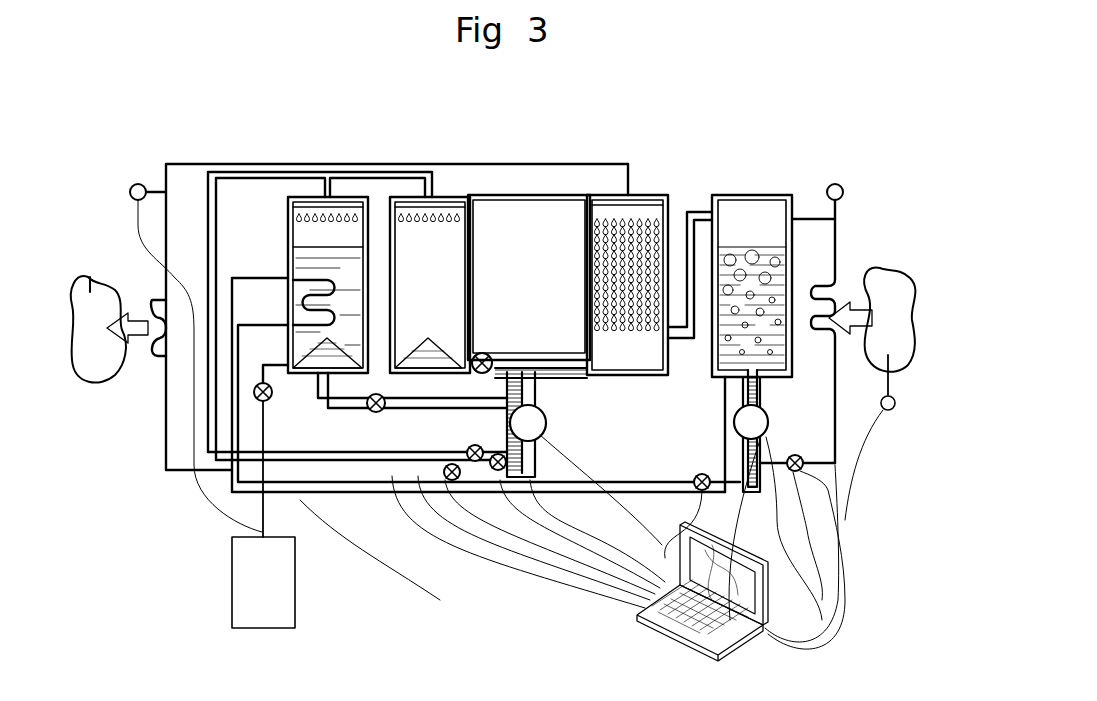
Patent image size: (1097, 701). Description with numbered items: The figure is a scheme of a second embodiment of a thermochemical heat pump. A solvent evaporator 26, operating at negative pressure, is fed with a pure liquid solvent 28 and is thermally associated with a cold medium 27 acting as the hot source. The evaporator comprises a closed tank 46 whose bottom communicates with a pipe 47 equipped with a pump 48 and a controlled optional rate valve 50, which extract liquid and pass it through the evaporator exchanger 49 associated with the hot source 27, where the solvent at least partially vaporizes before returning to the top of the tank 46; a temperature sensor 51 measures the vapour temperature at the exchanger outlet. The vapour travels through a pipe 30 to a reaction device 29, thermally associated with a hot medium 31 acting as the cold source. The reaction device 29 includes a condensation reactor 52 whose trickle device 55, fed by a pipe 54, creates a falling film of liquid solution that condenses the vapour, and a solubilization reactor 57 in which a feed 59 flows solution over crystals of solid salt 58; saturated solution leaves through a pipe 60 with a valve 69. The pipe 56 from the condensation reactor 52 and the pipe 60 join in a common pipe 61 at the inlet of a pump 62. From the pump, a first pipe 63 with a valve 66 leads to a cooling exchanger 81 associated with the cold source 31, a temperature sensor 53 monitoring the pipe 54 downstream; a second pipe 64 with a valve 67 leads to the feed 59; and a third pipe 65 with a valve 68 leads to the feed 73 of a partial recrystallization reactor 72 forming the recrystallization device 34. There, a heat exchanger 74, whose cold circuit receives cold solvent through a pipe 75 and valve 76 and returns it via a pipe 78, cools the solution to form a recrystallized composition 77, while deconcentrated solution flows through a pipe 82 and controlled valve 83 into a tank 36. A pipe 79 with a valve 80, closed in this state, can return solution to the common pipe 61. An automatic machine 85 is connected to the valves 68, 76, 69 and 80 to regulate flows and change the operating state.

The solvent evaporator 26 is at (803, 249).
The cold medium 27 is at (892, 298).
The pure liquid solvent 28 is at (741, 229).
The reaction device 29 is at (488, 197).
The pipe 30 is at (690, 290).
The hot medium 31 is at (88, 277).
The recrystallization device 34 is at (265, 188).
The tank 36 is at (250, 560).
The closed tank 46 is at (766, 200).
The pipe 47 is at (768, 430).
The pump 48 is at (803, 468).
The evaporator exchanger 49 is at (852, 270).
The controlled optional rate valve 50 is at (834, 470).
The temperature sensor 51 is at (838, 184).
The condensation reactor 52 is at (612, 262).
The temperature sensor 53 is at (135, 185).
The pipe 54 is at (522, 163).
The trickle device 55 is at (635, 205).
The pipe 56 is at (563, 357).
The solubilization reactor 57 is at (439, 227).
The solid salt crystals 58 is at (425, 335).
The feed 59 is at (437, 205).
The pipe 60 is at (470, 355).
The common pipe 61 is at (535, 395).
The pump 62 is at (547, 423).
The first pipe 63 is at (186, 486).
The second pipe 64 is at (256, 398).
The third pipe 65 is at (292, 492).
The controlled optional rate valve 66 is at (400, 413).
The controlled optional rate valve 67 is at (476, 462).
The feed optional rate valve 68 is at (453, 480).
The controlled optional rate valve 69 is at (462, 352).
The partial recrystallization reactor 72 is at (301, 244).
The feed 73 is at (335, 205).
The heat exchanger 74 is at (305, 262).
The pipe 75 is at (652, 482).
The controlled optional rate valve 76 is at (706, 490).
The recrystallized composition 77 is at (300, 302).
The pipe 78 is at (725, 408).
The pipe 79 is at (397, 487).
The controlled optional rate valve 80 is at (372, 412).
The cooling exchanger 81 is at (145, 355).
The pipe 82 is at (262, 532).
The controlled valve 83 is at (262, 378).
The automatic machine 85 is at (722, 633).